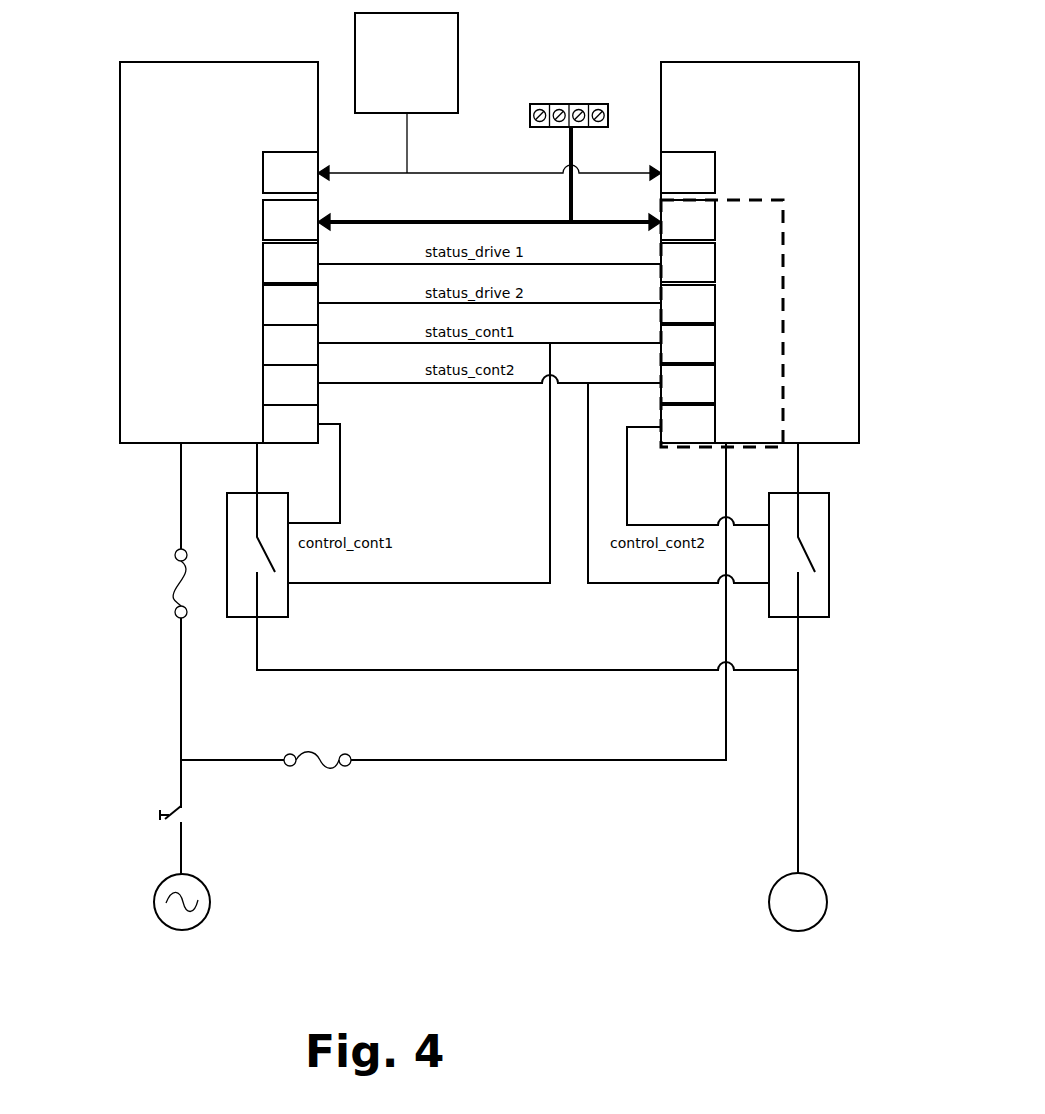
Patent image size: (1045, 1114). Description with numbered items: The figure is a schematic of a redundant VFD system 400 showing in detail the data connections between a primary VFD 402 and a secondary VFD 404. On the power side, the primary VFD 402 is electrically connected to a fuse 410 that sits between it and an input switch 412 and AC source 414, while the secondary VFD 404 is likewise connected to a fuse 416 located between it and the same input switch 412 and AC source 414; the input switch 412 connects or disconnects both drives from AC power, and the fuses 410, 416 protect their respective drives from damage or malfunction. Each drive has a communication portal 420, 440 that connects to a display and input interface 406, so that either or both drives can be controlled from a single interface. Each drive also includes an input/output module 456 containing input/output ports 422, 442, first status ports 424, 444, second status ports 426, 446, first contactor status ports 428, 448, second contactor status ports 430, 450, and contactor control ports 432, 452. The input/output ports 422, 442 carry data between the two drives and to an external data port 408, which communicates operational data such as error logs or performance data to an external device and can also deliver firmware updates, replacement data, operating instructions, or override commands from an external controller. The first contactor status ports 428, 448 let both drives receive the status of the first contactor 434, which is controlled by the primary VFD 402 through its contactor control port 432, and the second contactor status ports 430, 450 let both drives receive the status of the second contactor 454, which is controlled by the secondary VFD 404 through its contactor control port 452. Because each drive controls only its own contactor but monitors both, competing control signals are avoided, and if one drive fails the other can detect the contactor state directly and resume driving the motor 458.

The redundant VFD system 400 is at (605, 953).
The primary VFD 402 is at (219, 252).
The secondary VFD 404 is at (760, 252).
The display and input interface 406 is at (406, 93).
The external data port 408 is at (568, 104).
The fuse 410 is at (158, 595).
The input switch 412 is at (160, 820).
The AC source 414 is at (152, 916).
The fuse 416 is at (332, 775).
The communication portal 420 is at (263, 173).
The input/output port 422 is at (263, 220).
The first status port 424 is at (263, 263).
The second status port 426 is at (263, 305).
The first contactor status port 428 is at (263, 345).
The second contactor status port 430 is at (263, 385).
The contactor control port 432 is at (263, 424).
The first contactor 434 is at (242, 618).
The communication portal 440 is at (715, 168).
The input/output port 442 is at (715, 222).
The first status port 444 is at (715, 268).
The second status port 446 is at (715, 309).
The first contactor status port 448 is at (715, 349).
The second contactor status port 450 is at (715, 389).
The contactor control port 452 is at (715, 429).
The second contactor 454 is at (810, 620).
The input/output module 456 is at (775, 200).
The motor 458 is at (770, 890).